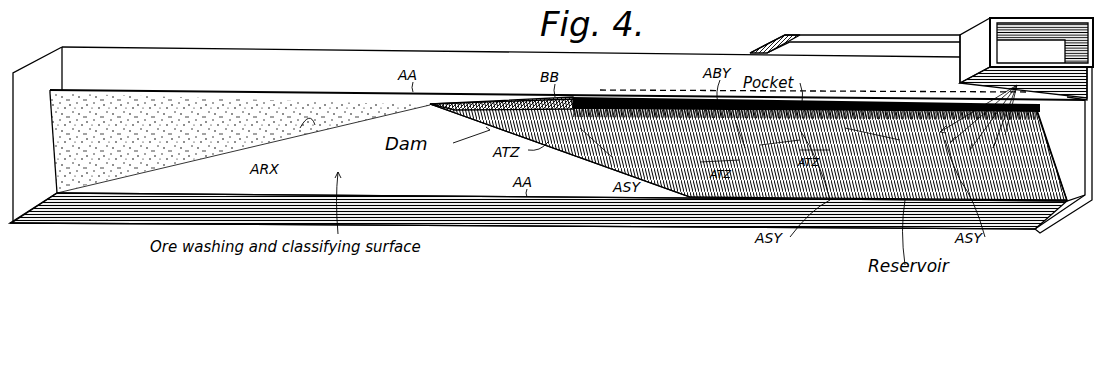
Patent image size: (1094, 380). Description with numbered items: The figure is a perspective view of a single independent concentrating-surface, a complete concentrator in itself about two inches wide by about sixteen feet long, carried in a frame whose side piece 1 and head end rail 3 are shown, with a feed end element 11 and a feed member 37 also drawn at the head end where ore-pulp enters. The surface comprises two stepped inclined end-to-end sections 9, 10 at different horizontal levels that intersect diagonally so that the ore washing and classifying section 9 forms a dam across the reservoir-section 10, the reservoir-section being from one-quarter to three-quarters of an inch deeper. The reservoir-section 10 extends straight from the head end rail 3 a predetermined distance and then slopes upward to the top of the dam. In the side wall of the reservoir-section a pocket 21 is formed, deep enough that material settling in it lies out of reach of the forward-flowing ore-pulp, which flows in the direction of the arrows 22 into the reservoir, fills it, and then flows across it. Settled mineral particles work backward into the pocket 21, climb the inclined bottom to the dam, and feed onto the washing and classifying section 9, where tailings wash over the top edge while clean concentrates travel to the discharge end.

The side piece 1 is at (867, 36).
The head end rail 3 is at (1063, 150).
The ore washing and classifying section 9 is at (240, 143).
The reservoir-section 10 is at (900, 135).
The back wall of trough 11 is at (567, 53).
The pocket 21 is at (823, 103).
The arrows 22 is at (1017, 85).
The feed box 37 is at (1032, 23).